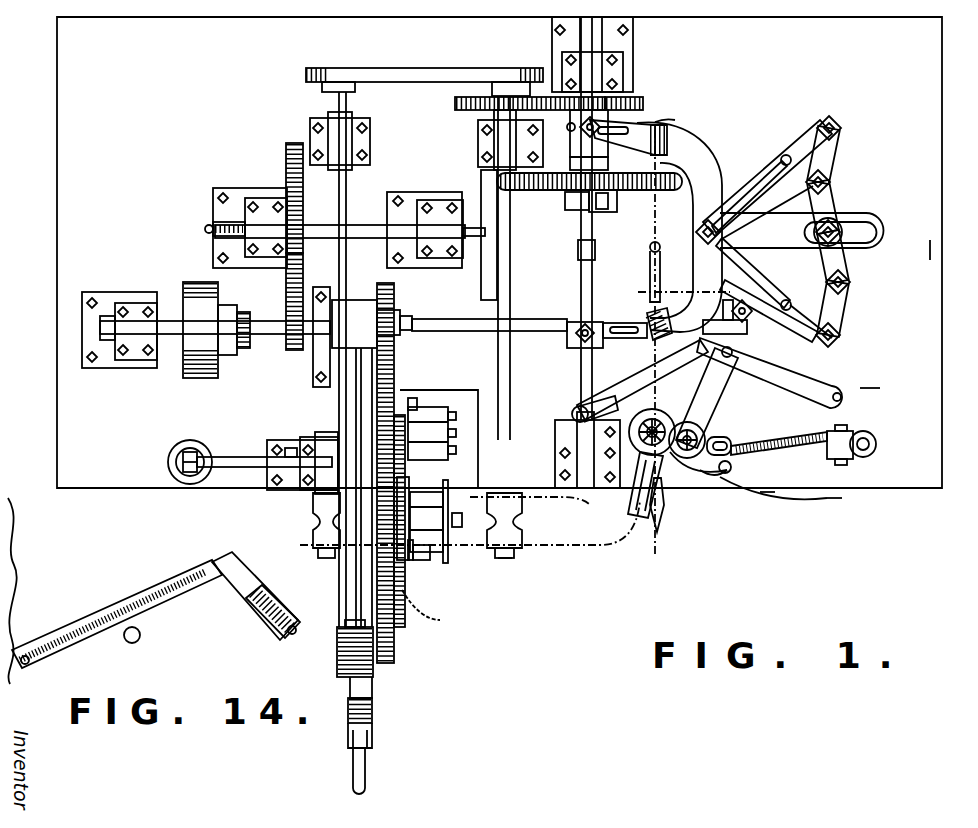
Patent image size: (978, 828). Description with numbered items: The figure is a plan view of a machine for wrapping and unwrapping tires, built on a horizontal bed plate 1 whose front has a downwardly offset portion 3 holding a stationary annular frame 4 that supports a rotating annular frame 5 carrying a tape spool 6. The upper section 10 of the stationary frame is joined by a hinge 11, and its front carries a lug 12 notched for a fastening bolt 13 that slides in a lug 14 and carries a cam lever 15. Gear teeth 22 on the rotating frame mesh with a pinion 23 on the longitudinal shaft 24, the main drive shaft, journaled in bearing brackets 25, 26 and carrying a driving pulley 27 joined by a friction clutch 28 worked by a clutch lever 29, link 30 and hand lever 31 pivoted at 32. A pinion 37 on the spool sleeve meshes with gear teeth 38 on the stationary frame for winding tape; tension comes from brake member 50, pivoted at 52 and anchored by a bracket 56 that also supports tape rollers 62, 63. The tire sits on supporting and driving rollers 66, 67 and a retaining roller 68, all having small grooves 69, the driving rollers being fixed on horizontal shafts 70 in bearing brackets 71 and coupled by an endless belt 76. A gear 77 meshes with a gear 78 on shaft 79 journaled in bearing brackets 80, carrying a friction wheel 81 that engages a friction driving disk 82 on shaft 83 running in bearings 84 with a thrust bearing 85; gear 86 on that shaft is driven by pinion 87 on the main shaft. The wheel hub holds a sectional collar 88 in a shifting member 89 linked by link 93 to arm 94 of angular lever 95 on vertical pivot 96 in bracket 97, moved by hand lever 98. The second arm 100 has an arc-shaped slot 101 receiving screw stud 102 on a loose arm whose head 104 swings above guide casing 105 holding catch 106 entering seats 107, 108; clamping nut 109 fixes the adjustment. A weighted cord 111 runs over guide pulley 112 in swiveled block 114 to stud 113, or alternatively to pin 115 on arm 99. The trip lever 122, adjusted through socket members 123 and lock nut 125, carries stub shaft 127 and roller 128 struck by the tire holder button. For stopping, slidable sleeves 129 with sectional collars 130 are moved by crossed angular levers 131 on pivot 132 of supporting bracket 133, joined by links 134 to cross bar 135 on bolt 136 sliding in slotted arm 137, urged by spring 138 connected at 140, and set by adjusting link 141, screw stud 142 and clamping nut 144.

In FIG. 1, the bed plate 1 is at (783, 67).
In FIG. 1, the downwardly offset portion 3 is at (439, 439).
In FIG. 1, the stationary annular frame 4 is at (337, 660).
In FIG. 1, the rotating annular frame 5 is at (324, 632).
In FIG. 1, the tape spool 6 is at (425, 565).
In FIG. 1, the upper section 10 is at (356, 402).
In FIG. 1, the hinge 11 is at (307, 338).
In FIG. 1, the lug 12 is at (352, 696).
In FIG. 1, the fastening bolt 13 is at (373, 710).
In FIG. 1, the lug 14 is at (375, 742).
In FIG. 1, the cam lever 15 is at (366, 772).
In FIG. 1, the gear teeth 22 is at (395, 385).
In FIG. 1, the pinion 23 is at (392, 302).
In FIG. 1, the longitudinal shaft 24 is at (270, 335).
In FIG. 1, the bearing bracket 25 is at (356, 239).
In FIG. 1, the bearing bracket 26 is at (132, 322).
In FIG. 1, the driving pulley 27 is at (183, 368).
In FIG. 1, the friction clutch 28 is at (228, 356).
In FIG. 1, the clutch lever 29 is at (246, 312).
In FIG. 1, the link 30 is at (530, 319).
In FIG. 1, the hand lever 31 is at (663, 530).
In FIG. 1, the pivot 32 is at (661, 247).
In FIG. 1, the pinion 37 is at (423, 509).
In FIG. 1, the gear teeth 38 is at (406, 628).
In FIG. 1, the tension brake member 50 is at (420, 515).
In FIG. 1, the pivot 52 is at (442, 608).
In FIG. 1, the bracket 56 is at (458, 432).
In FIG. 1, the roller 62 is at (427, 420).
In FIG. 1, the roller 63 is at (448, 462).
In FIG. 1, the supporting and driving roller 66 is at (316, 541).
In FIG. 1, the supporting and driving roller 67 is at (512, 558).
In FIG. 1, the retaining roller 68 is at (422, 562).
In FIG. 1, the grooves 69 is at (524, 525).
In FIG. 1, the horizontal shaft 70 is at (348, 200).
In FIG. 1, the bearing bracket 71 is at (348, 133).
In FIG. 1, the endless belt 76 is at (425, 68).
In FIG. 1, the gear 77 is at (465, 112).
In FIG. 1, the gear 78 is at (640, 96).
In FIG. 1, the shaft 79 is at (580, 236).
In FIG. 1, the bearing bracket 80 is at (635, 62).
In FIG. 1, the friction wheel 81 is at (672, 192).
In FIG. 1, the friction driving disk 82 is at (485, 268).
In FIG. 1, the shaft 83 is at (405, 225).
In FIG. 1, the bearing 84 is at (215, 246).
In FIG. 1, the thrust bearing 85 is at (222, 222).
In FIG. 1, the gear 86 is at (286, 160).
In FIG. 1, the pinion 87 is at (292, 352).
In FIG. 1, the sectional collar 88 is at (614, 208).
In FIG. 1, the shifting member 89 is at (566, 203).
In FIG. 1, the link 93 is at (597, 275).
In FIG. 1, the arm 94 is at (625, 322).
In FIG. 1, the angular lever 95 is at (748, 328).
In FIG. 1, the vertical pivot 96 is at (770, 365).
In FIG. 1, the bracket 97 is at (770, 277).
In FIG. 1, the hand lever 98 is at (578, 406).
In FIG. 1, the arm 99 is at (849, 375).
In FIG. 1, the arm 100 is at (716, 395).
In FIG. 1, the arc-shaped slot 101 is at (736, 446).
In FIG. 1, the screw stud 102 is at (680, 480).
In FIG. 1, the head 104 is at (706, 510).
In FIG. 1, the guide casing 105 is at (773, 501).
In FIG. 1, the catch 106 is at (846, 499).
In FIG. 1, the seat 107 is at (760, 456).
In FIG. 1, the seat 108 is at (600, 402).
In FIG. 1, the clamping nut 109 is at (706, 428).
In FIG. 1, the cord 111 is at (818, 428).
In FIG. 1, the guide pulley 112 is at (852, 436).
In FIG. 1, the stud 113 is at (790, 524).
In FIG. 1, the block 114 is at (893, 443).
In FIG. 1, the pin 115 is at (889, 382).
In FIG. 1, the trip lever 122 is at (255, 470).
In FIG. 14, the trip lever 122 is at (95, 618).
In FIG. 1, the socket member 123 is at (176, 450).
In FIG. 1, the lock nut 125 is at (170, 476).
In FIG. 14, the stub shaft 127 is at (244, 570).
In FIG. 14, the roller 128 is at (262, 612).
In FIG. 1, the slidable sleeve 129 is at (662, 130).
In FIG. 1, the sectional collar 130 is at (572, 128).
In FIG. 1, the angular lever 131 is at (722, 162).
In FIG. 1, the pivot 132 is at (728, 213).
In FIG. 1, the supporting bracket 133 is at (780, 222).
In FIG. 1, the link 134 is at (845, 142).
In FIG. 1, the cross bar 135 is at (838, 218).
In FIG. 1, the bolt 136 is at (870, 222).
In FIG. 1, the slotted arm 137 is at (885, 250).
In FIG. 1, the spring 138 is at (786, 155).
In FIG. 1, the connection 140 is at (790, 301).
In FIG. 1, the adjusting link 141 is at (674, 322).
In FIG. 1, the screw stud 142 is at (634, 515).
In FIG. 1, the clamping nut 144 is at (539, 510).